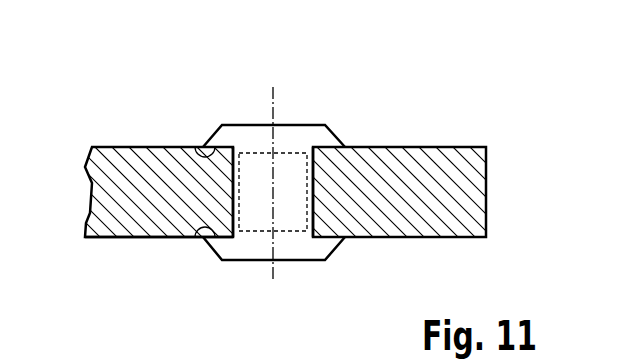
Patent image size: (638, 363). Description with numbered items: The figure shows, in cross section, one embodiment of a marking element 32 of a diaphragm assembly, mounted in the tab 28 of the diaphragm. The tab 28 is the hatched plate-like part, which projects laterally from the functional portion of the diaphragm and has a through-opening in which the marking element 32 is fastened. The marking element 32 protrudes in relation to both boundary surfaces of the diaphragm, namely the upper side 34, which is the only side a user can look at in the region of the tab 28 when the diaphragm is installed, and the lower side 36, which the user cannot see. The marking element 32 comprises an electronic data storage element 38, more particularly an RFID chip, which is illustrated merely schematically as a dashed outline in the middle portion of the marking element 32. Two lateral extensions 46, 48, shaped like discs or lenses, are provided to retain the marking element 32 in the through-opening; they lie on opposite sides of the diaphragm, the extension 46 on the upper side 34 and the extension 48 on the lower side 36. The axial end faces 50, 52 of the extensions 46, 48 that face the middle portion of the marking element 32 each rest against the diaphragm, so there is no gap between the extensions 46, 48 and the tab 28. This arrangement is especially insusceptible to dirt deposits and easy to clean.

The tab 28 is at (455, 172).
The marking element 32 is at (295, 106).
The upper side 34 is at (130, 147).
The lower side 36 is at (125, 238).
The electronic data storage element 38 is at (288, 232).
The lateral extension 46 is at (318, 137).
The lateral extension 48 is at (240, 250).
The axial end face 50 is at (193, 147).
The axial end face 52 is at (195, 237).